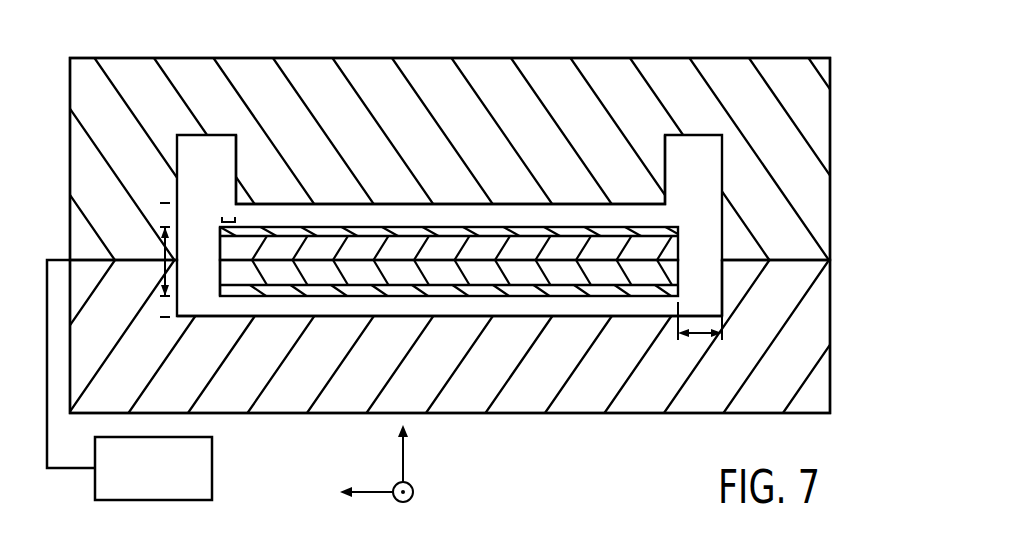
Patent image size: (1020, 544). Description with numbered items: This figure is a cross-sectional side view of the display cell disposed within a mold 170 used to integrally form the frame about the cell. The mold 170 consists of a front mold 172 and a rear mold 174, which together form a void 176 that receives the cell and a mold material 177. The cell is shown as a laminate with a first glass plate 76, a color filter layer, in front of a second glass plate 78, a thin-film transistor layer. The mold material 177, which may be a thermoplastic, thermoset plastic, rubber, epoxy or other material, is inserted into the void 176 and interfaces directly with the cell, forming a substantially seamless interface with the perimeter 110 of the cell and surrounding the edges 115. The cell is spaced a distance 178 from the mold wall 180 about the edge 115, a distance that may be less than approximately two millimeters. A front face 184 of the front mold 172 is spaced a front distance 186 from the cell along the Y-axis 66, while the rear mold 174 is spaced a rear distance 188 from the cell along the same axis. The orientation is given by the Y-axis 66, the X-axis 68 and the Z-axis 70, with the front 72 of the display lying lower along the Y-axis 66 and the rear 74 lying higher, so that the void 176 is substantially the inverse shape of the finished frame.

The mold 170 is at (831, 274).
The rear mold 174 is at (833, 70).
The void 176 is at (710, 148).
The front mold 172 is at (574, 413).
The front face 184 is at (452, 318).
The second glass plate 78 is at (596, 245).
The first glass plate 76 is at (591, 276).
The perimeter 110 is at (227, 210).
The edges 115 is at (212, 274).
The rear distance 188 is at (165, 199).
The front distance 186 is at (165, 321).
The distance 178 is at (702, 336).
The mold wall 180 is at (733, 290).
The mold material 177 is at (212, 466).
The Z-axis 70 is at (413, 489).
The Y-axis 66 is at (402, 458).
The X-axis 68 is at (368, 498).
The rear 74 is at (555, 33).
The front 72 is at (590, 496).